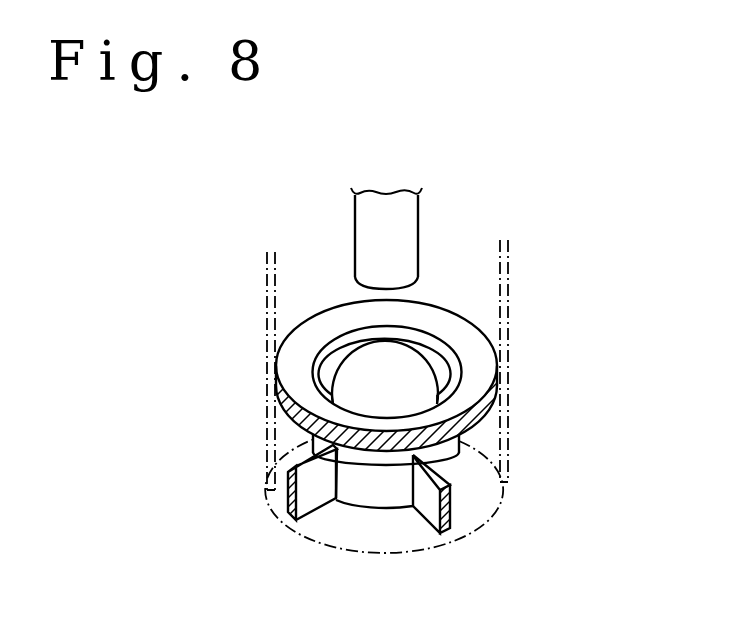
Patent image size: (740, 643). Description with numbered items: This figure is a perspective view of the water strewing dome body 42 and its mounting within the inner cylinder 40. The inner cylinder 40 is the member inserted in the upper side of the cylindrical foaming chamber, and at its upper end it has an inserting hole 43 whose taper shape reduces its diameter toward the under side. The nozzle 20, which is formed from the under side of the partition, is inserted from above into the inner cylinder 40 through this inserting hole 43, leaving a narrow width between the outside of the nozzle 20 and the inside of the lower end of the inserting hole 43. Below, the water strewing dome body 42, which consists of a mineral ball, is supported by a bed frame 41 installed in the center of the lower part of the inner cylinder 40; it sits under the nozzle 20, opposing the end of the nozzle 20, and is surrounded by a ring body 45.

The nozzle 20 is at (408, 260).
The inner cylinder 40 is at (508, 310).
The bed frame 41 is at (383, 502).
The water strewing dome body 42 is at (413, 367).
The inserting hole 43 is at (320, 353).
The ring body 45 is at (490, 374).